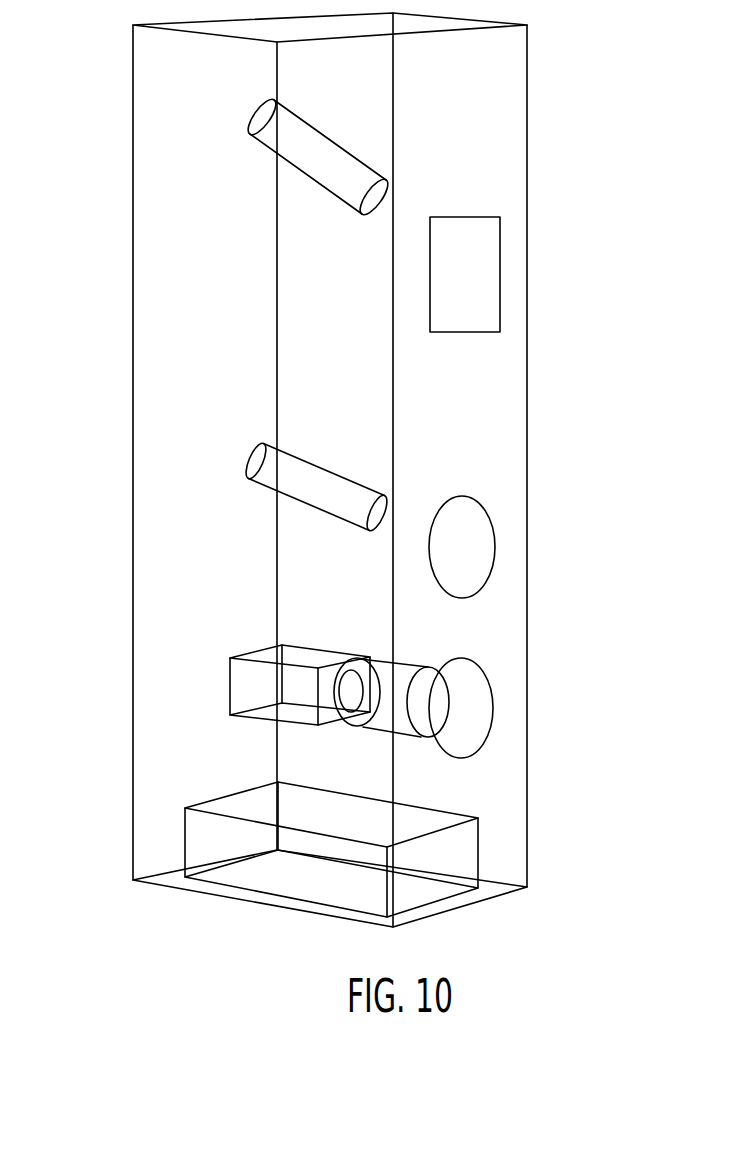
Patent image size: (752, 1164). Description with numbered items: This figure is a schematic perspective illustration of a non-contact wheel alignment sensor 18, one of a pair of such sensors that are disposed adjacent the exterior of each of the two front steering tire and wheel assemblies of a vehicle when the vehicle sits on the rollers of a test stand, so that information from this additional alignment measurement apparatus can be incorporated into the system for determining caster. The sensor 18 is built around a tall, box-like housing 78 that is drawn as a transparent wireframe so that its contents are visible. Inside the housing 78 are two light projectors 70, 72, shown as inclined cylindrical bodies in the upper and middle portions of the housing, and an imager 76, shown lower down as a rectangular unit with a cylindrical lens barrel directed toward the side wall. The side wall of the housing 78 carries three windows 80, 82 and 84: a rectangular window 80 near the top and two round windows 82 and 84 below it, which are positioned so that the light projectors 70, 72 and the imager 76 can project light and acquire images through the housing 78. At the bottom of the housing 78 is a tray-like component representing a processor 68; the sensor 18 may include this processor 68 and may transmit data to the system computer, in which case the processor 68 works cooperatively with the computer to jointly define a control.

The wheel alignment sensor 18 is at (610, 107).
The processor 68 is at (280, 868).
The light projector 70 is at (308, 147).
The light projector 72 is at (313, 492).
The imager 76 is at (253, 692).
The housing 78 is at (180, 330).
The window 80 is at (500, 273).
The window 82 is at (489, 517).
The window 84 is at (485, 673).